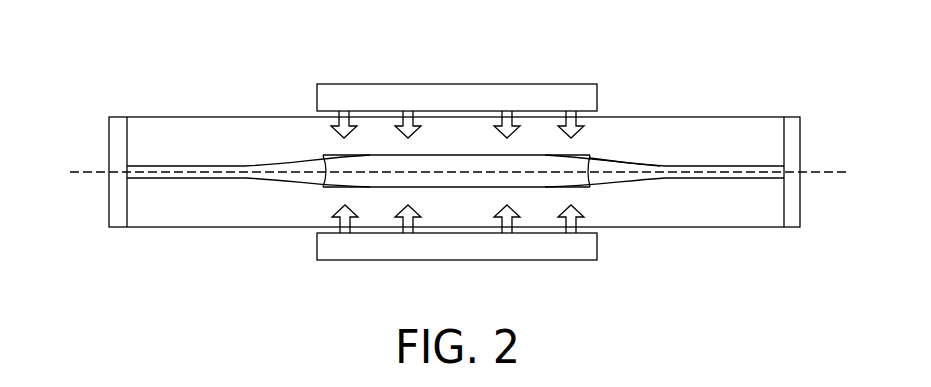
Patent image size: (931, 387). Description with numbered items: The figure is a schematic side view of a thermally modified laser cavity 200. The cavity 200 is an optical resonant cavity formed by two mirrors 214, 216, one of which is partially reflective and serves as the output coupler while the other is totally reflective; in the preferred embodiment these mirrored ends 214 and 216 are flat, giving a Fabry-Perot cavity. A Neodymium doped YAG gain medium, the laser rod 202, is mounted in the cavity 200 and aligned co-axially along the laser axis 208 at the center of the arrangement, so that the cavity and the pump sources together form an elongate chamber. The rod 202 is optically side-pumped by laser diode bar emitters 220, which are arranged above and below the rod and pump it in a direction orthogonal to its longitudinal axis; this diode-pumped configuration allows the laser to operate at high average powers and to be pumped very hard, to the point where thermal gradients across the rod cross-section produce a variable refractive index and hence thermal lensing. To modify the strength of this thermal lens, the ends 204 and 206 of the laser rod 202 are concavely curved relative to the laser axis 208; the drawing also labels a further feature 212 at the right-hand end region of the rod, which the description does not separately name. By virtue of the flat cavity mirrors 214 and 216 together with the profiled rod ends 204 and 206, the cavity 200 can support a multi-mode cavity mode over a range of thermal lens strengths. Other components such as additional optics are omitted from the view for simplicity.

The laser cavity 200 is at (300, 115).
The laser rod 202 is at (545, 155).
The end of the laser rod 204 is at (323, 186).
The end of the laser rod 206 is at (594, 187).
The laser axis 208 is at (82, 174).
The tapered transition region 212 is at (635, 164).
The mirror 214 is at (109, 129).
The mirror 216 is at (801, 128).
The laser diode bar emitters 220 is at (459, 84).